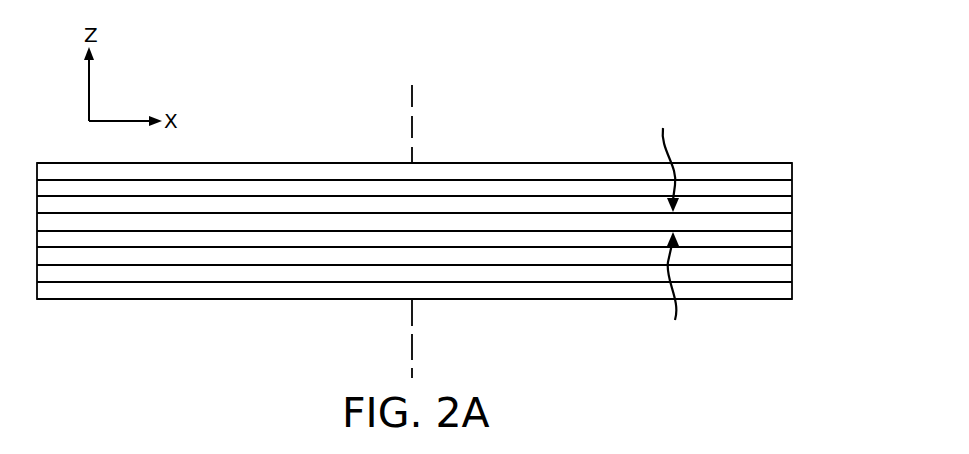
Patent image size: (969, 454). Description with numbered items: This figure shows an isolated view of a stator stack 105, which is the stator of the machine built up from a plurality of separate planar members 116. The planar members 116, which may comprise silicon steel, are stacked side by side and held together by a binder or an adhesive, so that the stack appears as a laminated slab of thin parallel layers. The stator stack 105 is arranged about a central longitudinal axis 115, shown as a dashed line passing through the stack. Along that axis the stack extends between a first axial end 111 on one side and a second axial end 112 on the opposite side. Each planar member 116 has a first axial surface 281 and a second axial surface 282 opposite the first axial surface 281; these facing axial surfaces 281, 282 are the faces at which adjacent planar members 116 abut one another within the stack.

The stator stack 105 is at (261, 68).
The first axial end 111 is at (720, 162).
The second axial end 112 is at (768, 299).
The central longitudinal axis 115 is at (412, 95).
The planar members 116 is at (776, 222).
The first axial surface 281 is at (671, 158).
The second axial surface 282 is at (673, 287).